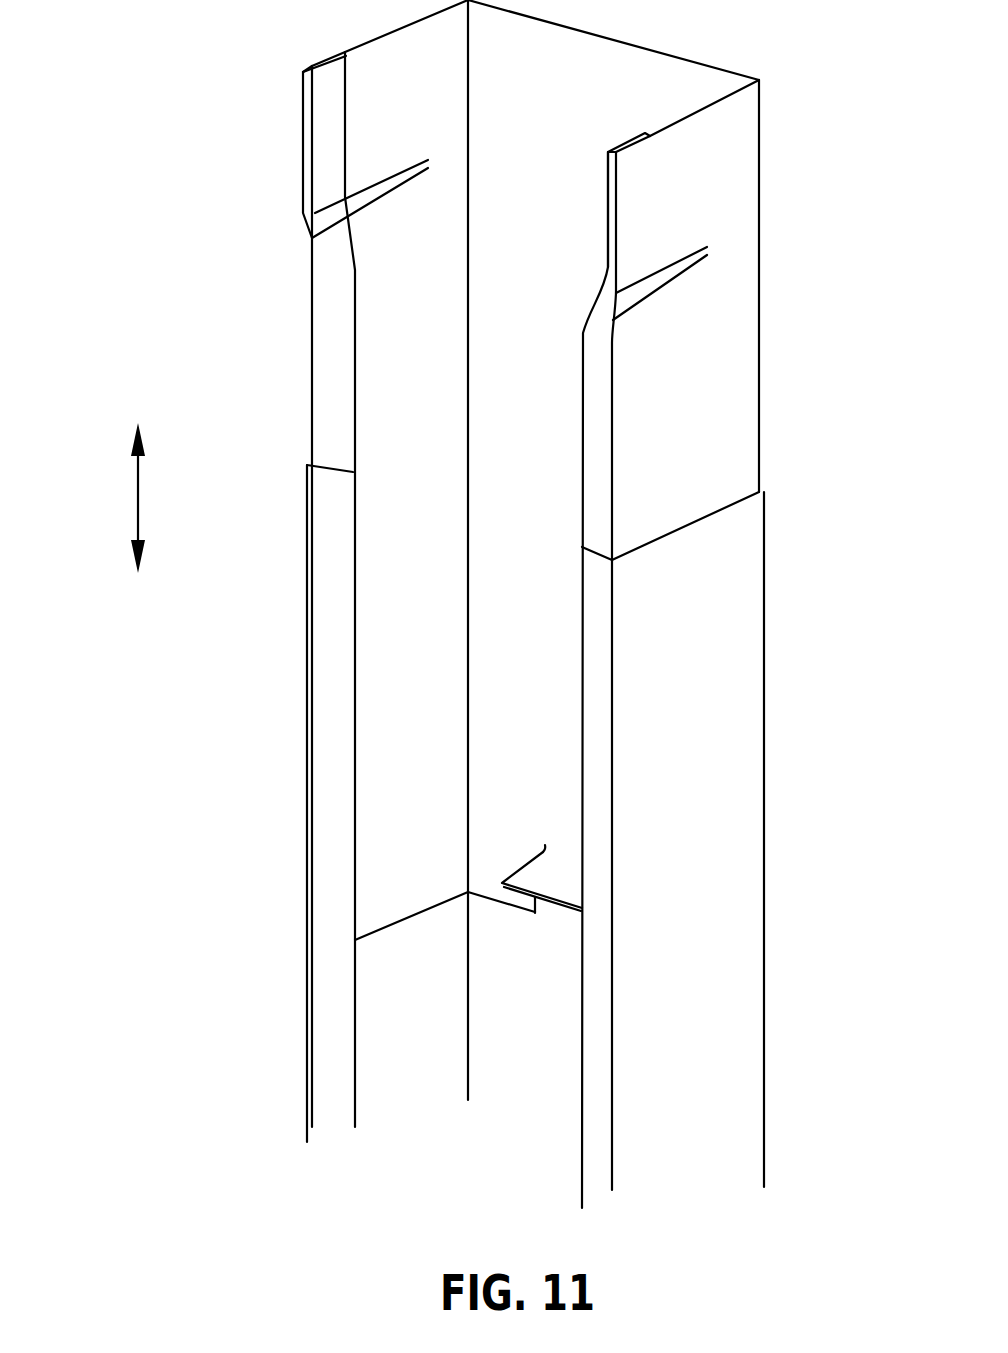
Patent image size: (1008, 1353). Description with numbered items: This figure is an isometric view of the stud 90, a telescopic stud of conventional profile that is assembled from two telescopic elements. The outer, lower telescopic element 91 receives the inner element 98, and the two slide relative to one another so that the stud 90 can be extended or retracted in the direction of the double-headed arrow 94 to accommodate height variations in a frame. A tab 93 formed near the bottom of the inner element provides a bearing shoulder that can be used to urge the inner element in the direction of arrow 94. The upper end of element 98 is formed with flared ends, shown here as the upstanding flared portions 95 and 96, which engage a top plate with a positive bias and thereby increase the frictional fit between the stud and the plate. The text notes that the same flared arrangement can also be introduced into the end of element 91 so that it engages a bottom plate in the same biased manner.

The stud 90 is at (262, 728).
The telescopic element 91 is at (725, 615).
The tab 93 is at (517, 877).
The arrow 94 is at (138, 495).
The left tab 95 is at (325, 133).
The right tab 96 is at (609, 232).
The element 98 is at (717, 423).